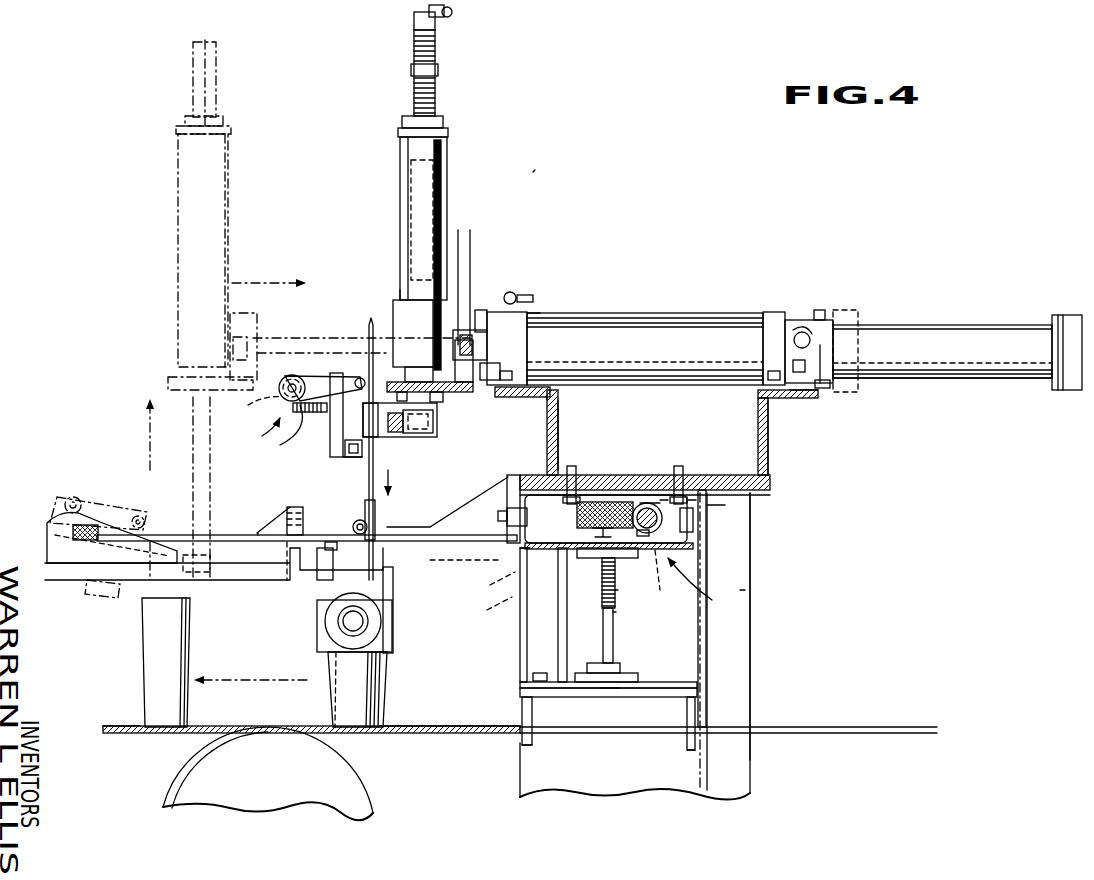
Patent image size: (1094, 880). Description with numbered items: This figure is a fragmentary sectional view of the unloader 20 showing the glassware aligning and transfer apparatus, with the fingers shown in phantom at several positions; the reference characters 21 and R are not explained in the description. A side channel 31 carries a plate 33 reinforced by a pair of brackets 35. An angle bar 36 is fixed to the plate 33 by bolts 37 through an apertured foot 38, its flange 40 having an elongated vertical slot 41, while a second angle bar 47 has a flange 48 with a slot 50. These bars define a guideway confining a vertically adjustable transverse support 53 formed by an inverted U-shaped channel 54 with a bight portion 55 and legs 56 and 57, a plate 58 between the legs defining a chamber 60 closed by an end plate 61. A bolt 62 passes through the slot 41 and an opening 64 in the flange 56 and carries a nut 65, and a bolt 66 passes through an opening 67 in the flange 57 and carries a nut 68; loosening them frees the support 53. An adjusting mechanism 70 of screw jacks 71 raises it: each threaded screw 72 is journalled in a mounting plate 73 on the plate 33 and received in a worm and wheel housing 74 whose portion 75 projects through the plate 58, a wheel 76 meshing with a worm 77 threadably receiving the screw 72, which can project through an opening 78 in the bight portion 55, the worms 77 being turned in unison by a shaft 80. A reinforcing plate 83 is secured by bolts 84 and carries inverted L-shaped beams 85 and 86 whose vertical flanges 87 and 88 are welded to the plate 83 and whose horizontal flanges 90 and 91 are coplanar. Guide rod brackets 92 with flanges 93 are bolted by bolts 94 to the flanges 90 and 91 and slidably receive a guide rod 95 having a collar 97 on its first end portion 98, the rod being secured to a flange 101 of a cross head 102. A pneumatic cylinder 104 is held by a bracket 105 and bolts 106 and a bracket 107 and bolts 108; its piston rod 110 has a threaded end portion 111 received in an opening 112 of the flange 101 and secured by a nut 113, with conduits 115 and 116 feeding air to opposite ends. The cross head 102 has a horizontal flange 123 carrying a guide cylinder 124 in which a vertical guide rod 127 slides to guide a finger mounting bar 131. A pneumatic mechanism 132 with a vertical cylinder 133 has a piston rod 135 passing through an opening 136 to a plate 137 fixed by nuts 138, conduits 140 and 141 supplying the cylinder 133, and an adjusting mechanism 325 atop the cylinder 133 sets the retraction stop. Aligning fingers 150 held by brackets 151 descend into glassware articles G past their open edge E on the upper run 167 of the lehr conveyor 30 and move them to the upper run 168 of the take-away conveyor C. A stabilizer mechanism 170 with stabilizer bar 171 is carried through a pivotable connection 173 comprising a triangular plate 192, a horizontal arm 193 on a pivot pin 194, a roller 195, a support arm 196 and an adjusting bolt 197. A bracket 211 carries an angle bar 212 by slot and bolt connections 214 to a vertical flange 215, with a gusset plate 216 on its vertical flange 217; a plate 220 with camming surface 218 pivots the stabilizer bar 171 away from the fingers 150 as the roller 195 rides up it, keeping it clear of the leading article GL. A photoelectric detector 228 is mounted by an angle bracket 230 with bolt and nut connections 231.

The machine 20 is at (535, 172).
The base 21 is at (518, 782).
The lehr conveyor 30 is at (445, 738).
The side channel 31 is at (582, 776).
The plate 33 is at (652, 705).
The brackets 35 is at (532, 715).
The angle bar 36 is at (520, 690).
The bolts 37 is at (537, 672).
The apertured foot 38 is at (520, 682).
The flange 40 is at (490, 588).
The elongated vertical slot 41 is at (486, 612).
The second angle bar 47 is at (752, 622).
The flange 48 is at (704, 662).
The elongated vertical slot 50 is at (742, 590).
The transverse support 53 is at (703, 586).
The inverted U-shaped channel 54 is at (692, 500).
The bight portion 55 is at (662, 500).
The flange 56 is at (525, 548).
The flange 57 is at (707, 545).
The plate 58 is at (560, 556).
The chamber 60 is at (558, 590).
The plate 61 is at (682, 545).
The bolt 62 is at (506, 510).
The opening 64 is at (512, 502).
The nut 65 is at (577, 518).
The bolt 66 is at (700, 520).
The opening 67 is at (720, 504).
The nut 68 is at (705, 547).
The adjusting mechanism 70 is at (615, 612).
The screw jacks 71 is at (614, 616).
The externally threaded screw 72 is at (620, 665).
The mounting plate 73 is at (610, 689).
The worm and wheel housing 74 is at (636, 510).
The portion 75 is at (616, 592).
The wheel 76 is at (640, 530).
The worm 77 is at (669, 584).
The opening 78 is at (648, 502).
The shaft 80 is at (601, 570).
The reinforcing plate 83 is at (770, 487).
The bolts 84 is at (570, 476).
The beam 85 is at (770, 432).
The beam 86 is at (560, 406).
The vertical flange 87 is at (770, 456).
The vertical flange 88 is at (559, 430).
The horizontal flange 90 is at (805, 396).
The horizontal flange 91 is at (560, 390).
The guide rod brackets 92 is at (820, 320).
The flanges 93 is at (826, 386).
The bolts 94 is at (808, 364).
The guide rod 95 is at (920, 345).
The collar 97 is at (1065, 315).
The first end portion 98 is at (1000, 379).
The flange 101 is at (460, 300).
The cross head 102 is at (482, 396).
The pneumatic cylinder 104 is at (640, 342).
The bracket 105 is at (740, 373).
The bolts 106 is at (770, 372).
The bracket 107 is at (530, 316).
The bolts 108 is at (535, 366).
The piston rod 110 is at (262, 333).
The threaded end portion 111 is at (476, 330).
The opening 112 is at (480, 318).
The nut 113 is at (405, 380).
The flexible conduit 115 is at (800, 330).
The flexible conduit 116 is at (530, 297).
The horizontal flange 123 is at (368, 352).
The vertical guide cylinder 124 is at (400, 292).
The vertical guide rod 127 is at (405, 207).
The finger mounting bar 131 is at (392, 467).
The pneumatic mechanism 132 is at (398, 180).
The vertical pneumatic cylinder 133 is at (445, 212).
The piston rod 135 is at (415, 486).
The opening 136 is at (435, 405).
The plate 137 is at (422, 436).
The nuts 138 is at (466, 400).
The flexible conduit 140 is at (449, 14).
The flexible conduit 141 is at (426, 322).
The aligning fingers 150 is at (368, 500).
The bracket 151 is at (358, 422).
The upper run 167 is at (835, 726).
The upper run 168 is at (130, 726).
The stabilizer mechanism 170 is at (256, 437).
The stabilizer bar 171 is at (355, 458).
The pivotable connection 173 is at (300, 378).
The triangular plate 192 is at (355, 378).
The horizontal arm 193 is at (298, 410).
The pivot pin 194 is at (337, 375).
The roller 195 is at (247, 409).
The vertical support arm 196 is at (345, 449).
The bolt 197 is at (280, 445).
The bracket 211 is at (465, 568).
The angle bar 212 is at (235, 578).
The slot and bolt connections 214 is at (356, 526).
The vertical flange 215 is at (291, 508).
The gusset plate 216 is at (258, 530).
The vertical flange 217 is at (185, 535).
The camming surface 218 is at (125, 515).
The plate 220 is at (52, 532).
The photoelectric light detector 228 is at (392, 604).
The angle bracket 230 is at (330, 553).
The bolt and nut connections 231 is at (320, 584).
The adjusting mechanism 325 is at (437, 72).
The take-away conveyor C is at (135, 735).
The upwardly opening end or edge E is at (320, 622).
The glassware articles G is at (385, 680).
The leading glassware article GL is at (378, 700).
The roller R is at (190, 647).